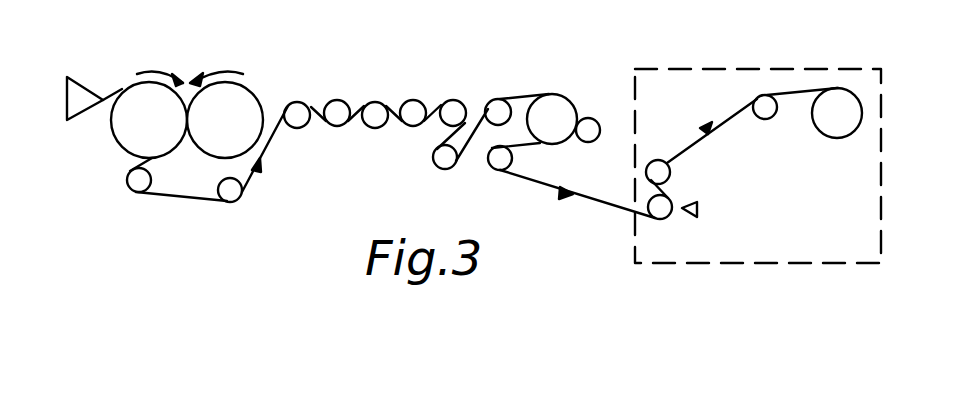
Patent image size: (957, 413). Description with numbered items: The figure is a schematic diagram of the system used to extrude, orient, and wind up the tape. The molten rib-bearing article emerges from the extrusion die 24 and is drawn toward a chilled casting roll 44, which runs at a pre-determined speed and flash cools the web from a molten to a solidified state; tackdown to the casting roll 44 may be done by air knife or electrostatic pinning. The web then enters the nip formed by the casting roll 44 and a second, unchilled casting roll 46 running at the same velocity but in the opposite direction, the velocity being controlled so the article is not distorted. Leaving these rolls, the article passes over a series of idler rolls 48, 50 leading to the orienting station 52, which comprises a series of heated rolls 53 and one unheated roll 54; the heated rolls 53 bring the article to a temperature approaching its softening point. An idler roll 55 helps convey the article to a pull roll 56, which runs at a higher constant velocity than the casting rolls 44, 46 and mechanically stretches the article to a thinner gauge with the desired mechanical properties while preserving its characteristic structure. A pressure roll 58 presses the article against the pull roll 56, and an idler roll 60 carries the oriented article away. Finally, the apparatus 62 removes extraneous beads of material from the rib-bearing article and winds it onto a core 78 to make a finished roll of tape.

The extrusion die 24 is at (87, 82).
The chilled casting roll 44 is at (123, 137).
The second casting roll 46 is at (243, 97).
The idler roll 48 is at (135, 187).
The idler roll 50 is at (227, 198).
The orienting station 52 is at (372, 94).
The heated rolls 53 is at (378, 108).
The unheated roll 54 is at (438, 163).
The idler roll 55 is at (500, 103).
The pull roll 56 is at (557, 98).
The pressure roll 58 is at (585, 142).
The idler roll 60 is at (497, 167).
The bead removal and winding apparatus 62 is at (763, 67).
The core 78 is at (822, 137).